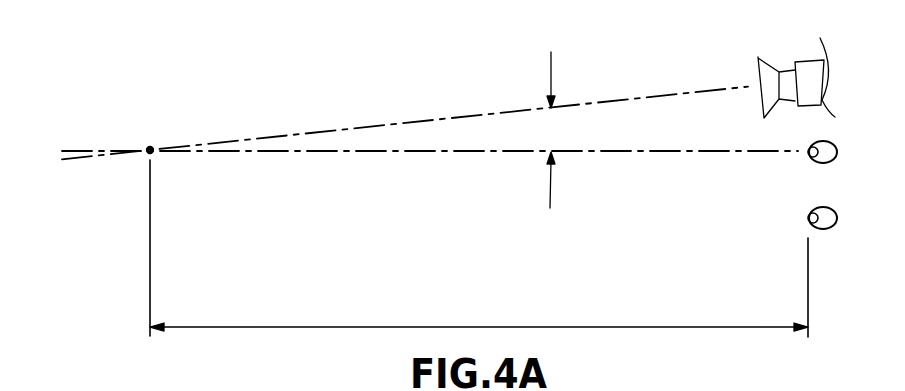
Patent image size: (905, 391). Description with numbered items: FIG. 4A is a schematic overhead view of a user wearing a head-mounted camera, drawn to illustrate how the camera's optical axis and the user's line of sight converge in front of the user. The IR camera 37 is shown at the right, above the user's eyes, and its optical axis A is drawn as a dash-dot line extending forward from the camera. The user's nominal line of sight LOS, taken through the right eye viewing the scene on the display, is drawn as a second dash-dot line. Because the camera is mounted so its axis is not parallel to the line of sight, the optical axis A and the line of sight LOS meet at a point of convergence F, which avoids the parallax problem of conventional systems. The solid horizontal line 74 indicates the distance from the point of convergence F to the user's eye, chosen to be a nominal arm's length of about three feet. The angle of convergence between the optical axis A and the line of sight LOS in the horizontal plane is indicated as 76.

The IR camera 37 is at (808, 60).
The solid horizontal line 74 is at (605, 325).
The angle of convergence in the horizontal plane 76 is at (550, 130).
The point of convergence F is at (150, 146).
The optical axis A is at (637, 100).
The line of sight LOS is at (682, 153).